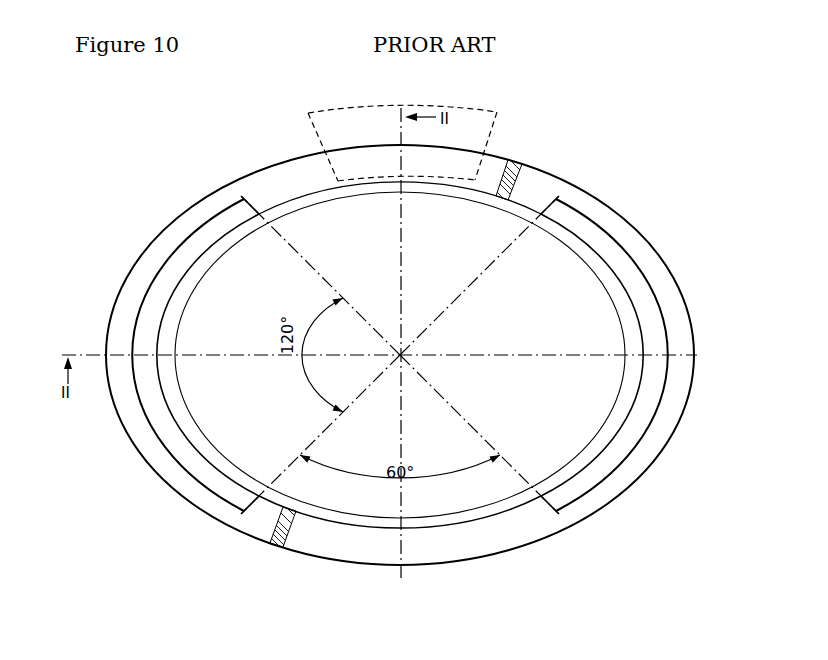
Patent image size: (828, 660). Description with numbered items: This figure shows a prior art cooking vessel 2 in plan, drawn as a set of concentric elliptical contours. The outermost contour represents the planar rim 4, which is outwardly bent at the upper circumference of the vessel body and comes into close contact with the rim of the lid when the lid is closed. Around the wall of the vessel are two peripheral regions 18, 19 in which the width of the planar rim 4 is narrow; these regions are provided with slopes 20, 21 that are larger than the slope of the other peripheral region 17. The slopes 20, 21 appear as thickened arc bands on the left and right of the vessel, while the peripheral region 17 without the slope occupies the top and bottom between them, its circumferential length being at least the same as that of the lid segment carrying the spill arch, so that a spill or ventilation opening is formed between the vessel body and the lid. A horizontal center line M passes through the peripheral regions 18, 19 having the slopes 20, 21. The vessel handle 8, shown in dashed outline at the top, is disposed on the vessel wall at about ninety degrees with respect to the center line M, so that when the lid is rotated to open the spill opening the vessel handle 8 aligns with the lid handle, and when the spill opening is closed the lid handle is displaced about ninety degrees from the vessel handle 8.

The cooking vessel 2 is at (526, 143).
The planar rim 4 is at (321, 550).
The vessel handle 8 is at (476, 112).
The peripheral region 17 is at (372, 190).
The peripheral region 18 is at (187, 308).
The peripheral region 19 is at (615, 403).
The slope 20 is at (156, 367).
The slope 21 is at (644, 372).
The center line M is at (507, 357).